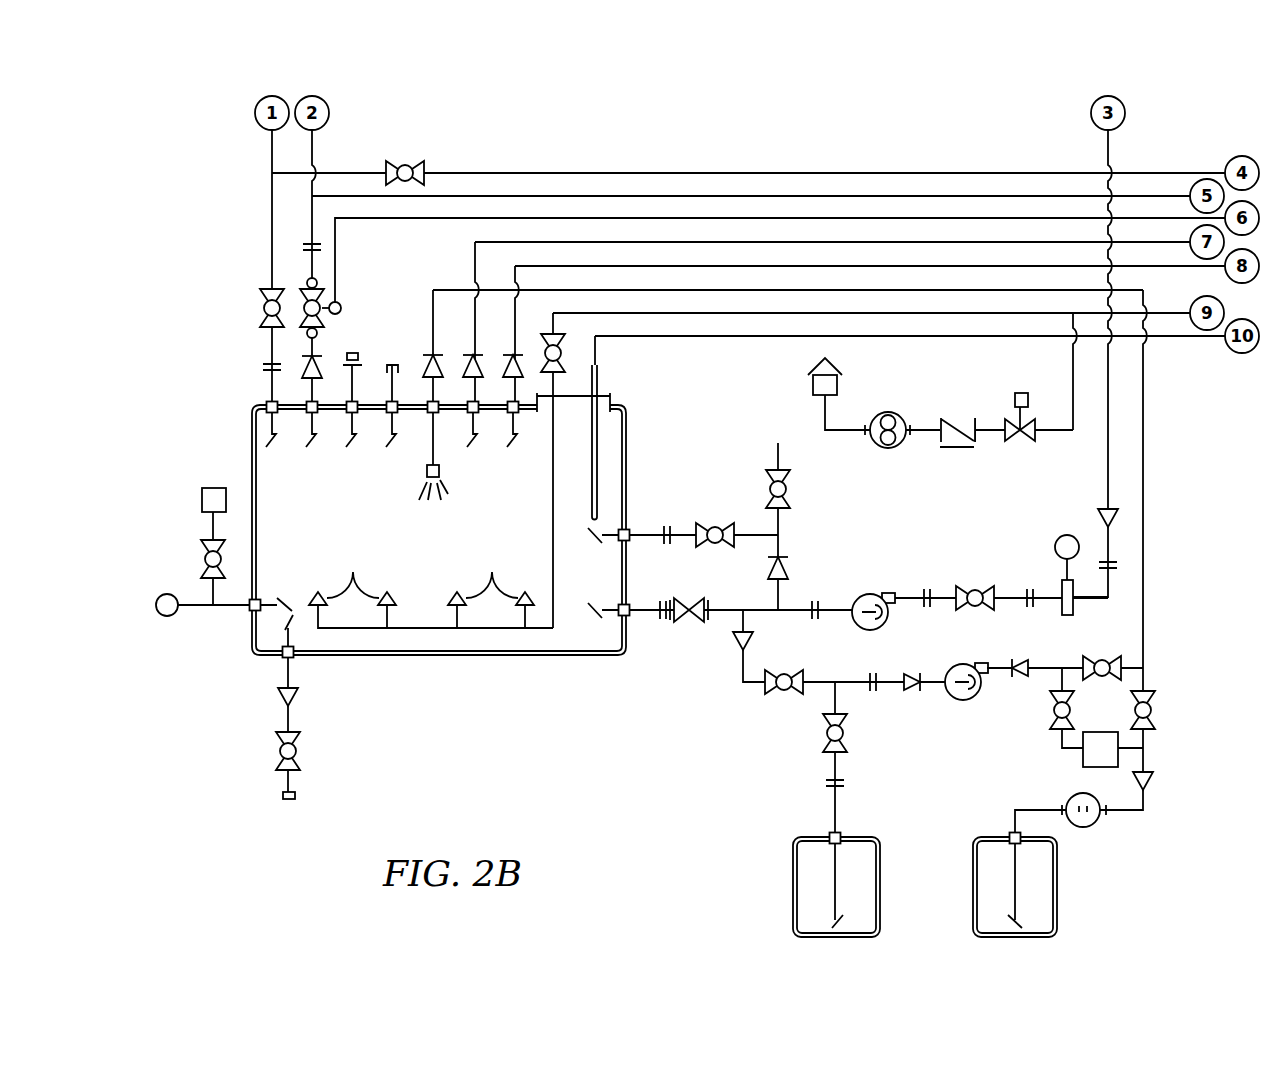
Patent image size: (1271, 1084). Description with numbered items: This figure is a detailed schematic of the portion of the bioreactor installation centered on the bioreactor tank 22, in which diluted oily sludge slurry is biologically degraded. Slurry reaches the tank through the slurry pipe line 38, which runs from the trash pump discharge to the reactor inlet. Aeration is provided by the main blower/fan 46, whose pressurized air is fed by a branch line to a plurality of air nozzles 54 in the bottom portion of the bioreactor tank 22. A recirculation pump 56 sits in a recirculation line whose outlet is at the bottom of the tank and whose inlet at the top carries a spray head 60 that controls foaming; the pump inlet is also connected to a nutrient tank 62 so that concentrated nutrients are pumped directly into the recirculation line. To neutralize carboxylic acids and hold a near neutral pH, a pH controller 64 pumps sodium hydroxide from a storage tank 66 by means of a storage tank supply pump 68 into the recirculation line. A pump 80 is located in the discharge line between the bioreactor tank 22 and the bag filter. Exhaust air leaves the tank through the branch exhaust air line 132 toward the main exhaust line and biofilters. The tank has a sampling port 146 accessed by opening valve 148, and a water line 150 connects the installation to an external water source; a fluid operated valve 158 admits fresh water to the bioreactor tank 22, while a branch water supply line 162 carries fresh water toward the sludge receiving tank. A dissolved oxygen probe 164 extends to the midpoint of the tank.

The bioreactor tank 22 is at (470, 656).
The slurry pipe line 38 is at (1170, 267).
The main blower/fan 46 is at (890, 412).
The air nozzles 54 is at (353, 572).
The recirculation pump 56 is at (953, 666).
The spray head 60 is at (441, 470).
The nutrient tank 62 is at (793, 870).
The pH controller 64 is at (1083, 765).
The storage tank 66 is at (973, 868).
The storage tank supply pump 68 is at (1092, 827).
The pump 80 is at (862, 598).
The branch exhaust air line 132 is at (475, 245).
The sampling port 146 is at (772, 441).
The valve 148 is at (792, 486).
The water line 150 is at (314, 150).
The fluid operated valve 158 is at (322, 312).
The branch water supply line 162 is at (680, 196).
The dissolved oxygen probe 164 is at (599, 383).